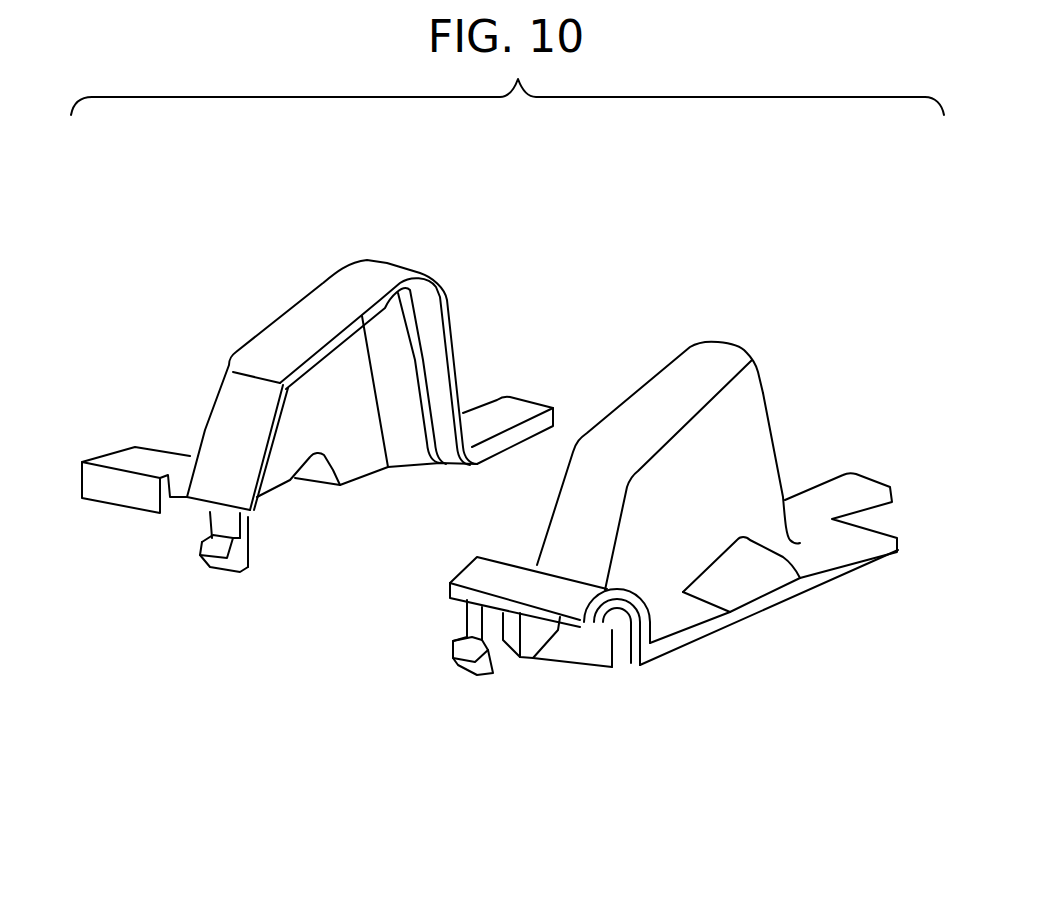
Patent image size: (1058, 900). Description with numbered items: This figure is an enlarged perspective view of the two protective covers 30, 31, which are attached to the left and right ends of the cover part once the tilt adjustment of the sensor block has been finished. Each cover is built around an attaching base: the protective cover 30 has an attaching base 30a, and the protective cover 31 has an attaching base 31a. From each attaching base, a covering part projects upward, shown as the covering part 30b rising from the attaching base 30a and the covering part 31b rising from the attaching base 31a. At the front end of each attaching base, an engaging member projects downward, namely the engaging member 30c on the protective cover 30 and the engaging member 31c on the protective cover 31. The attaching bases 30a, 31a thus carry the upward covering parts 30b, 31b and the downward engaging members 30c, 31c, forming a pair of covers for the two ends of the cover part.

The protective cover 30 is at (364, 270).
The attaching base 30a is at (488, 410).
The covering part 30b is at (380, 266).
The engaging member 30c is at (219, 572).
The protective cover 31 is at (690, 357).
The attaching base 31a is at (800, 503).
The covering part 31b is at (720, 360).
The engaging member 31c is at (491, 660).